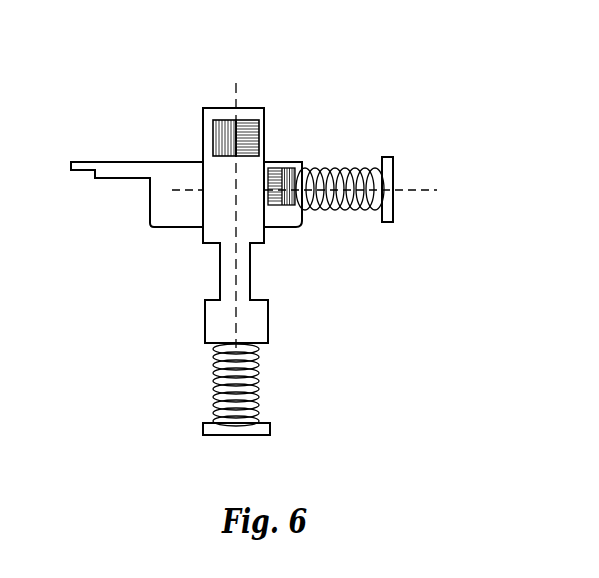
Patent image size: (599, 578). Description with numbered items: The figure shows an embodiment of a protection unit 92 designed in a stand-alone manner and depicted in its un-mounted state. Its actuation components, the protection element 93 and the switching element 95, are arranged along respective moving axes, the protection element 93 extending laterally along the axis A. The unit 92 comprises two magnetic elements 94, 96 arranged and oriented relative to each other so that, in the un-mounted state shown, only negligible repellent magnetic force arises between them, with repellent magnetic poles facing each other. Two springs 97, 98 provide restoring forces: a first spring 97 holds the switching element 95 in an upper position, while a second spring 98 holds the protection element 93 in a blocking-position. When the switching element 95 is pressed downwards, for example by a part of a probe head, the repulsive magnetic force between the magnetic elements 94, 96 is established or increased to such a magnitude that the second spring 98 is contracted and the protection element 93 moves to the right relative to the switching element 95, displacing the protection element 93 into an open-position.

The protection unit 92 is at (389, 77).
The protection element 93 is at (122, 165).
The magnetic element 94 is at (293, 172).
The switching element 95 is at (250, 112).
The magnetic element 96 is at (247, 130).
The first spring 97 is at (257, 385).
The second spring 98 is at (338, 210).
The axis A is at (420, 192).